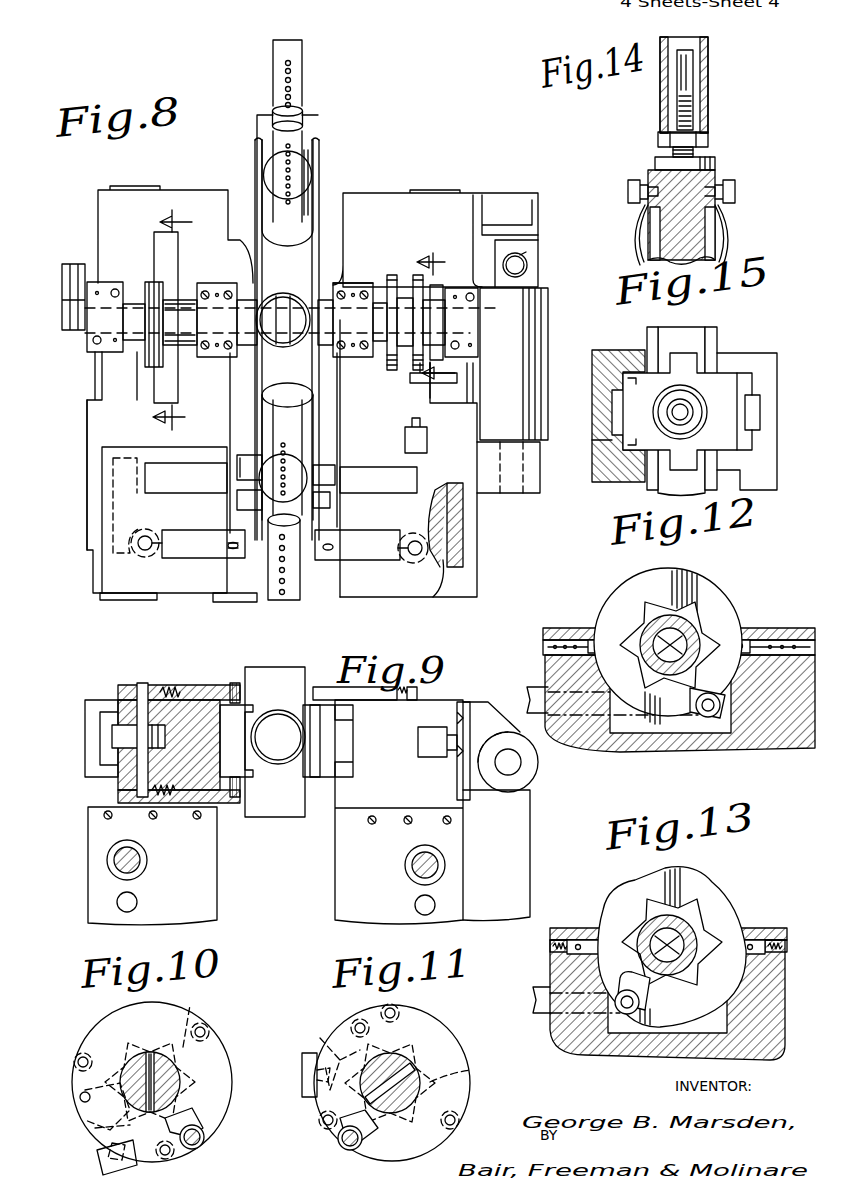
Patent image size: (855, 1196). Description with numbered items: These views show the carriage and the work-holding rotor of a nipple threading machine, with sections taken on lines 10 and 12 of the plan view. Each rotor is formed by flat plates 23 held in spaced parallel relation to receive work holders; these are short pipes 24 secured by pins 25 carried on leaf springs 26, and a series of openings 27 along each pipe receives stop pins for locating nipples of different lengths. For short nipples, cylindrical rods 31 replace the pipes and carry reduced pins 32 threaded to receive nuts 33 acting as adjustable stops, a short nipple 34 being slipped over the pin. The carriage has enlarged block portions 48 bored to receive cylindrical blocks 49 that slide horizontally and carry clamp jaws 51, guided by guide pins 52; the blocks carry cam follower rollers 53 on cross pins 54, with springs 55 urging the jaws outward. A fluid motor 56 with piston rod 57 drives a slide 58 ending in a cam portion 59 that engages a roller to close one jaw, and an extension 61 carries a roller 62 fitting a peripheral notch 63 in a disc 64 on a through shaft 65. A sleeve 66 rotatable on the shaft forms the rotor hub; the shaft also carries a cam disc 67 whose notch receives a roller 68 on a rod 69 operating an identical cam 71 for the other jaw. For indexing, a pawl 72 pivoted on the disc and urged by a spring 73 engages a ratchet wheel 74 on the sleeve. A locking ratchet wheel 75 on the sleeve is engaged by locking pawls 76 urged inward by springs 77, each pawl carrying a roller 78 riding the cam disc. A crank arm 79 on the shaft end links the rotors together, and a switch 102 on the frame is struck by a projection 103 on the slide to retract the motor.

In FIG. 8, the section line 10 is at (436, 320).
In FIG. 8, the section line 12 is at (172, 323).
In FIG. 8, the flat plates 23 is at (255, 151).
In FIG. 14, the flat plates 23 is at (650, 216).
In FIG. 15, the flat plates 23 is at (647, 333).
In FIG. 8, the pipes 24 is at (300, 192).
In FIG. 9, the pipes 24 is at (278, 710).
In FIG. 8, the pins 25 is at (237, 497).
In FIG. 14, the pins 25 is at (628, 186).
In FIG. 8, the leaf springs 26 is at (245, 467).
In FIG. 14, the leaf springs 26 is at (636, 235).
In FIG. 8, the openings 27 is at (292, 80).
In FIG. 14, the cylindrical rods 31 is at (715, 163).
In FIG. 14, the reduced pins 32 is at (693, 80).
In FIG. 15, the reduced pins 32 is at (685, 410).
In FIG. 14, the nuts 33 is at (708, 140).
In FIG. 14, the short nipple 34 is at (708, 51).
In FIG. 15, the short nipple 34 is at (680, 425).
In FIG. 9, the enlarged block portions 48 is at (185, 686).
In FIG. 9, the cylindrical blocks 49 is at (195, 712).
In FIG. 8, the clamp jaw 51 is at (232, 580).
In FIG. 9, the clamp jaw 51 is at (245, 775).
In FIG. 15, the clamp jaw 51 is at (655, 378).
In FIG. 9, the guide pins 52 is at (235, 683).
In FIG. 8, the cam follower rollers 53 is at (140, 562).
In FIG. 9, the cam follower rollers 53 is at (125, 738).
In FIG. 9, the cross pins 54 is at (138, 685).
In FIG. 9, the springs 55 is at (165, 686).
In FIG. 8, the fluid motors 56 is at (538, 303).
In FIG. 9, the fluid motors 56 is at (530, 778).
In FIG. 8, the piston rod 57 is at (530, 453).
In FIG. 8, the slide 58 is at (467, 513).
In FIG. 8, the cam portion 59 is at (433, 597).
In FIG. 9, the cam portion 59 is at (465, 702).
In FIG. 8, the extension 61 is at (437, 290).
In FIG. 10, the roller 62 is at (200, 1145).
In FIG. 11, the roller 62 is at (342, 1148).
In FIG. 10, the peripheral notch 63 is at (190, 1117).
In FIG. 11, the peripheral notch 63 is at (372, 1135).
In FIG. 8, the disc 64 is at (416, 275).
In FIG. 10, the disc 64 is at (220, 1052).
In FIG. 11, the disc 64 is at (440, 1030).
In FIG. 8, the through shaft 65 is at (460, 313).
In FIG. 8, the sleeve 66 is at (377, 307).
In FIG. 8, the cam disc 67 is at (153, 288).
In FIG. 12, the cam disc 67 is at (718, 590).
In FIG. 13, the cam disc 67 is at (710, 888).
In FIG. 12, the roller 68 is at (709, 717).
In FIG. 13, the roller 68 is at (627, 1014).
In FIG. 8, the rod 69 is at (130, 380).
In FIG. 12, the rod 69 is at (538, 687).
In FIG. 13, the rod 69 is at (538, 990).
In FIG. 8, the cam 71 is at (97, 493).
In FIG. 9, the cam 71 is at (90, 742).
In FIG. 10, the pawl 72 is at (95, 1130).
In FIG. 11, the pawl 72 is at (325, 1040).
In FIG. 10, the spring 73 is at (110, 1170).
In FIG. 11, the spring 73 is at (310, 1073).
In FIG. 10, the ratchet wheel 74 is at (197, 1019).
In FIG. 11, the ratchet wheel 74 is at (463, 1071).
In FIG. 12, the ratchet wheel 75 is at (630, 604).
In FIG. 13, the ratchet wheel 75 is at (705, 918).
In FIG. 12, the locking pawls 76 is at (612, 640).
In FIG. 13, the locking pawls 76 is at (598, 940).
In FIG. 12, the springs 77 is at (555, 628).
In FIG. 13, the springs 77 is at (560, 945).
In FIG. 13, the roller 78 is at (575, 930).
In FIG. 8, the crank arm 79 is at (62, 290).
In FIG. 8, the switch 102 is at (407, 439).
In FIG. 8, the projection 103 is at (410, 382).